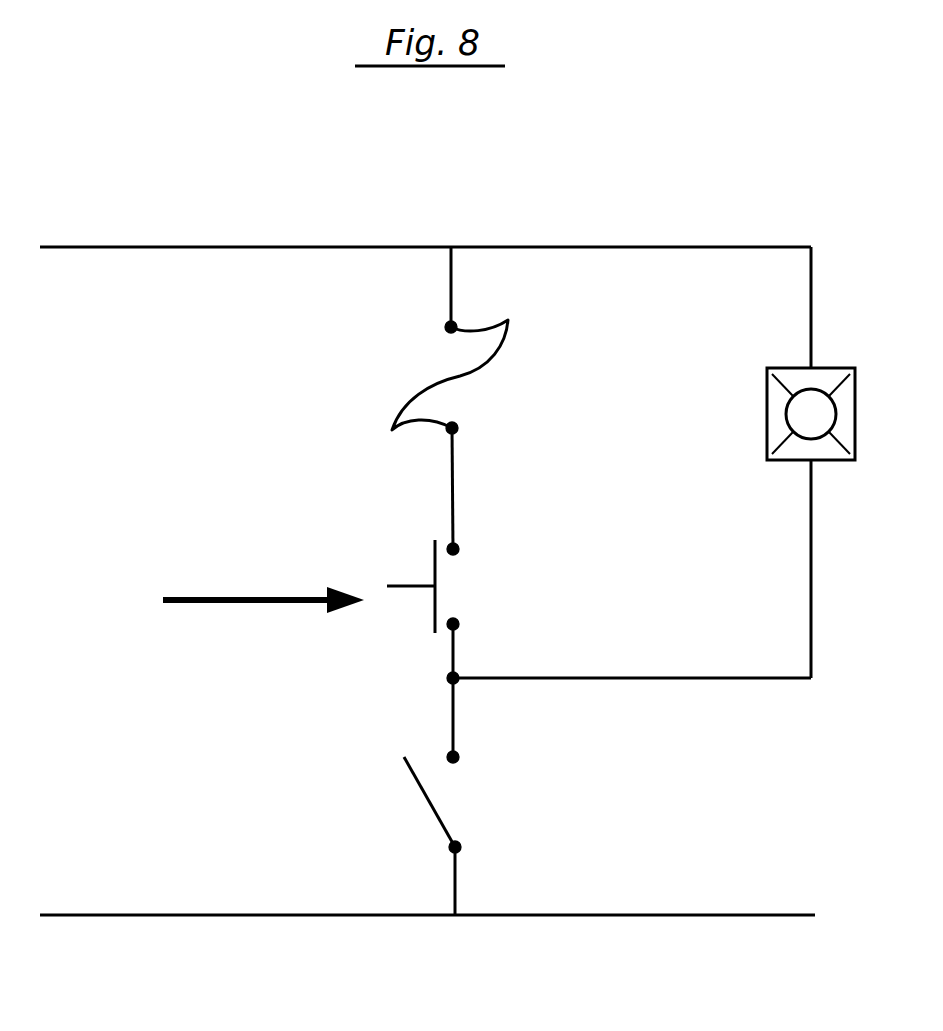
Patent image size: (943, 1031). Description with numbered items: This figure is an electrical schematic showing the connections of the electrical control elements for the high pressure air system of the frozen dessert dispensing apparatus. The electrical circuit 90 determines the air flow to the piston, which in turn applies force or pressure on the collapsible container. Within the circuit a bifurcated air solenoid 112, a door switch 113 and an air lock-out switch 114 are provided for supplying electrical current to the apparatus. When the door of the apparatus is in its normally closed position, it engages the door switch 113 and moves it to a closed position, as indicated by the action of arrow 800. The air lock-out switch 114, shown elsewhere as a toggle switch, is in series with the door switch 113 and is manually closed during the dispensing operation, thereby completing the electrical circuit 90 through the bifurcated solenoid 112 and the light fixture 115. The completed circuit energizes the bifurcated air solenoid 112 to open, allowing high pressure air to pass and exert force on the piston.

The electrical circuit 90 is at (195, 249).
The bifurcated air solenoid 112 is at (452, 352).
The door switch 113 is at (435, 571).
The air lock-out switch 114 is at (418, 782).
The light fixture 115 is at (767, 412).
The arrow 800 is at (217, 595).